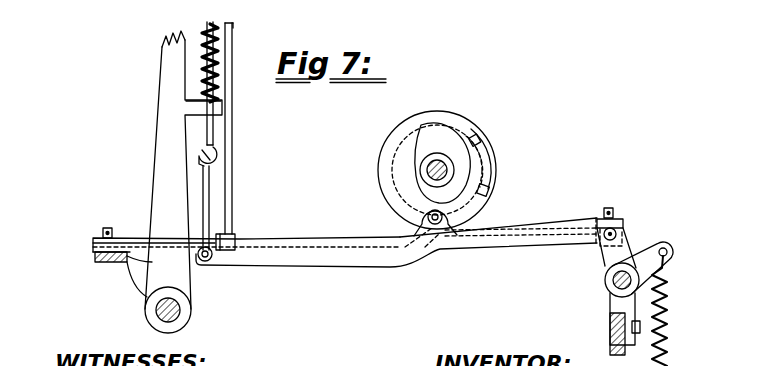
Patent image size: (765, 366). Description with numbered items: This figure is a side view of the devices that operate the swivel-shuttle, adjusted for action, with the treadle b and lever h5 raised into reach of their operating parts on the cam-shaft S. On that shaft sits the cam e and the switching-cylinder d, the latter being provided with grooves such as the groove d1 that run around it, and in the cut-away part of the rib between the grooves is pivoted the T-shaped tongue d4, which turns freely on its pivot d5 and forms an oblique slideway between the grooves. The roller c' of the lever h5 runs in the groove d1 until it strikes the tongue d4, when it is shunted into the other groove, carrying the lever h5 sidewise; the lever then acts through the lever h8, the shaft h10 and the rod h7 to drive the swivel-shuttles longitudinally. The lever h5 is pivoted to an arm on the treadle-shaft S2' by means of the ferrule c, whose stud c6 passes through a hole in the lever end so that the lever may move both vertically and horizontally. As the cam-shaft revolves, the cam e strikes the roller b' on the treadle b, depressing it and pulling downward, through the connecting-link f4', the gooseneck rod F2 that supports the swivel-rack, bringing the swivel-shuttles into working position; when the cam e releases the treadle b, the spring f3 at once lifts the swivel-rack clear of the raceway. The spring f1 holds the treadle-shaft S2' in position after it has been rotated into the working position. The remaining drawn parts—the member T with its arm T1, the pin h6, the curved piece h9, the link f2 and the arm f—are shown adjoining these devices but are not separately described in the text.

The lever T is at (183, 182).
The arm of lever T1 is at (228, 100).
The gooseneck rod F2 is at (221, 40).
The spring f3 is at (222, 58).
The shaft h10 is at (233, 117).
The connecting-link f4' is at (233, 204).
The lever h8 is at (236, 236).
The lever h5 is at (326, 212).
The pin h6 is at (100, 226).
The rod h7 is at (94, 257).
The curved piece h9 is at (130, 280).
The treadle b is at (396, 245).
The roller c' is at (428, 237).
The roller b' is at (421, 203).
The switching-cylinder d is at (462, 113).
The groove d1 is at (395, 171).
The cam e is at (443, 163).
The T-shaped tongue d4 is at (448, 165).
The cam-shaft S is at (486, 150).
The pivot d5 is at (492, 194).
The thimble or ferrule c is at (622, 223).
The stud c6 is at (614, 204).
The link f2 is at (608, 262).
The arm f is at (642, 268).
The spring f1 is at (669, 318).
The treadle-shaft S2' is at (605, 319).